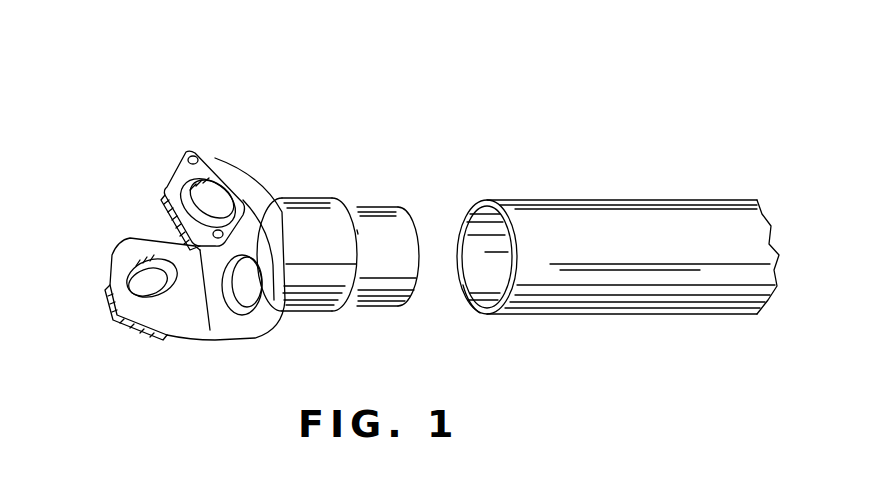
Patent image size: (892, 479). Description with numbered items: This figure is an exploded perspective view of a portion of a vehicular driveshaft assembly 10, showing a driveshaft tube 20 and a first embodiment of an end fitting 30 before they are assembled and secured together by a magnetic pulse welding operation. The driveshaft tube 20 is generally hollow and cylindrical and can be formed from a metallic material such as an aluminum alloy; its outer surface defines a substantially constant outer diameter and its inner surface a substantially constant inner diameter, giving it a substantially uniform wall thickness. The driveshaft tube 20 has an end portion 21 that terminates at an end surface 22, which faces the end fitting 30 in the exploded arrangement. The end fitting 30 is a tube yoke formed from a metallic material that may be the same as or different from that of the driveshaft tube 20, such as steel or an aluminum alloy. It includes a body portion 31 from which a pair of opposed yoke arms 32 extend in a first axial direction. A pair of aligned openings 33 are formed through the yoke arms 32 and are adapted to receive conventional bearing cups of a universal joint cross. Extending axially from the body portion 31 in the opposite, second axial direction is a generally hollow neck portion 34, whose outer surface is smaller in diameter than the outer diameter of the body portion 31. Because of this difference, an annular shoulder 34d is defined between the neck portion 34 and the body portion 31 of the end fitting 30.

The vehicular driveshaft assembly 10 is at (90, 88).
The driveshaft tube 20 is at (614, 200).
The end portion 21 is at (572, 288).
The end surface 22 is at (475, 313).
The end fitting 30 is at (247, 366).
The body portion 31 is at (287, 220).
The yoke arms 32 is at (163, 200).
The aligned openings 33 is at (215, 190).
The neck portion 34 is at (382, 285).
The annular shoulder 34d is at (357, 230).